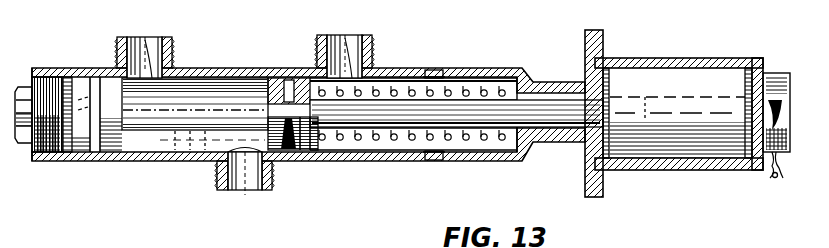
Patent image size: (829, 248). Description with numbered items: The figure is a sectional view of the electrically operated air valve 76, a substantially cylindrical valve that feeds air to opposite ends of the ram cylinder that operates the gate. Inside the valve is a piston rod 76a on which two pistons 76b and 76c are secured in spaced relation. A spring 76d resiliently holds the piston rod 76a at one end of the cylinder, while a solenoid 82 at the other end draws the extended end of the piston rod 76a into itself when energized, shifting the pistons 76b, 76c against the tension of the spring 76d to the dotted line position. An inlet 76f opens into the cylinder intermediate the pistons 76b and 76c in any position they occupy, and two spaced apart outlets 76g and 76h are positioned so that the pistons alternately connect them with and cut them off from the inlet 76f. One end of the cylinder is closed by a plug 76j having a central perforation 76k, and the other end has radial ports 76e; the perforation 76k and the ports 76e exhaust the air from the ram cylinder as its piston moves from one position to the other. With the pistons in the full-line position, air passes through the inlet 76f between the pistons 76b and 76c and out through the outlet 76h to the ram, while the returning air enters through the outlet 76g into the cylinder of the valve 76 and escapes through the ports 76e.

The air valve 76 is at (213, 70).
The piston rod 76a is at (355, 112).
The piston 76b is at (115, 152).
The piston 76c is at (307, 155).
The spring 76d is at (470, 90).
The radial ports 76e is at (438, 168).
The inlet 76f is at (245, 180).
The outlet 76g is at (357, 45).
The outlet 76h is at (150, 45).
The plug 76j is at (30, 78).
The central perforation 76k is at (18, 84).
The solenoid 82 is at (655, 97).